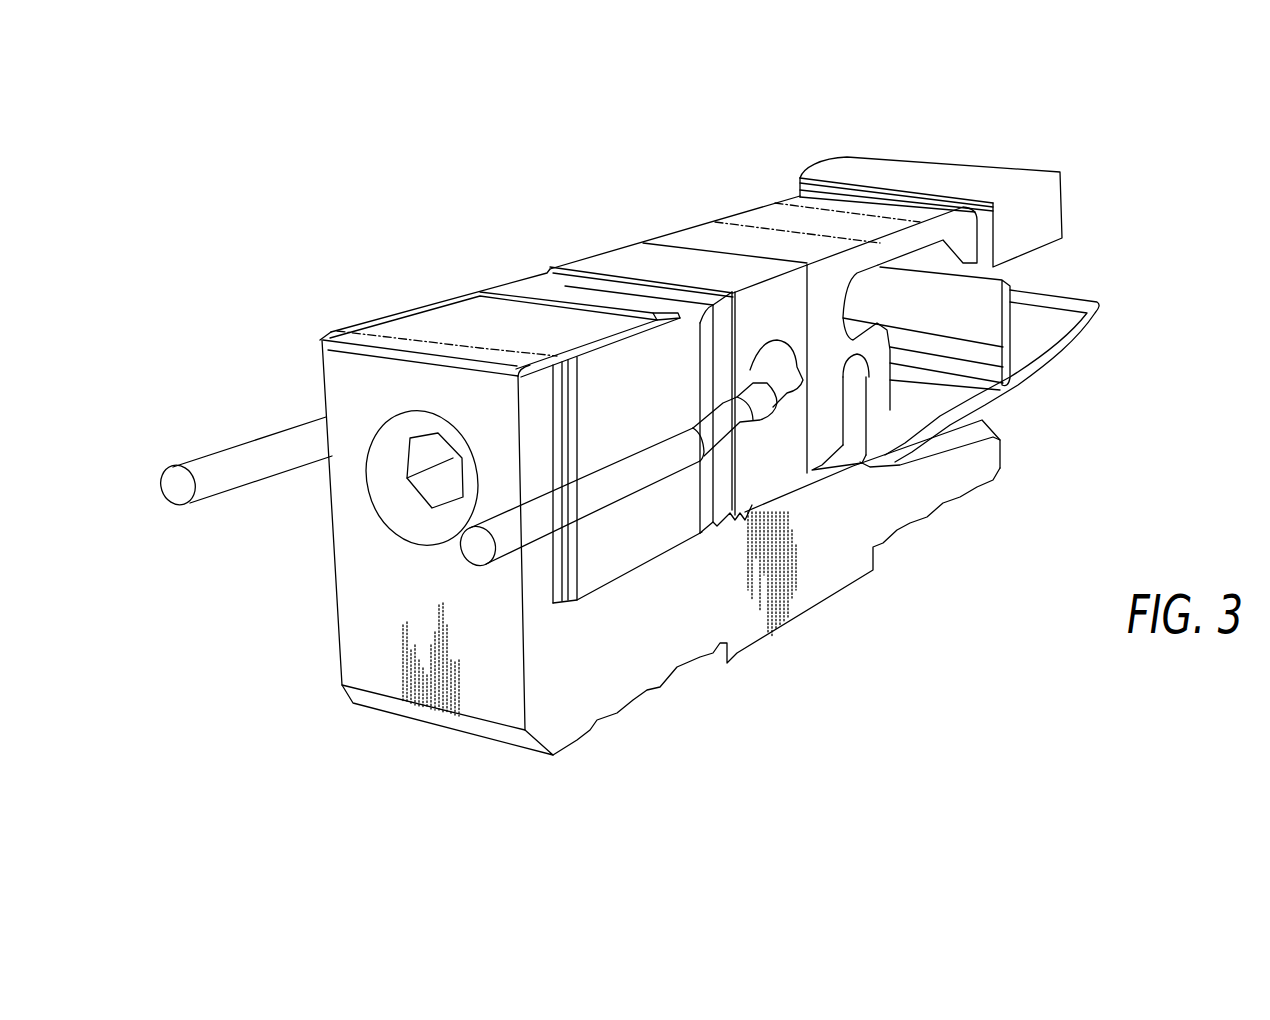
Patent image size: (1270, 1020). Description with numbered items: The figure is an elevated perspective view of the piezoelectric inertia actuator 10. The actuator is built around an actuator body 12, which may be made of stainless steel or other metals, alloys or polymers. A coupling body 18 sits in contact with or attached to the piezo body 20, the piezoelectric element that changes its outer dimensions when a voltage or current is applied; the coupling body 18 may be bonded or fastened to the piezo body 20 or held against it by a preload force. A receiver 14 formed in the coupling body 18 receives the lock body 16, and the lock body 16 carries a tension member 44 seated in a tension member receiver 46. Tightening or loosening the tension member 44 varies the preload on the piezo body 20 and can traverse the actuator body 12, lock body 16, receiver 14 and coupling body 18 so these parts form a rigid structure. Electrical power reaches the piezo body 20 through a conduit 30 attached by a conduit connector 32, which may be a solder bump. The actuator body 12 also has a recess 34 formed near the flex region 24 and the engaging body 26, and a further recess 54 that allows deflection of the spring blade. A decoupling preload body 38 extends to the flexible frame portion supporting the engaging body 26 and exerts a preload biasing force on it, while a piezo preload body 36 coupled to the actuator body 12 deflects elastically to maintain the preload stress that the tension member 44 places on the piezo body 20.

The piezoelectric inertia actuator 10 is at (1140, 176).
The actuator body 12 is at (423, 680).
The receiver 14 is at (527, 300).
The lock body 16 is at (452, 317).
The coupling body 18 is at (585, 290).
The piezo body 20 is at (632, 260).
The flex region 24 is at (831, 217).
The engaging body 26 is at (934, 173).
The conduit 30 is at (277, 447).
The conduit connector 32 is at (753, 392).
The recess 34 is at (930, 403).
The piezo preload body 36 is at (880, 397).
The decoupling preload body 38 is at (970, 303).
The tension member 44 is at (388, 503).
The tension member receiver 46 is at (413, 540).
The recess 54 is at (1065, 272).